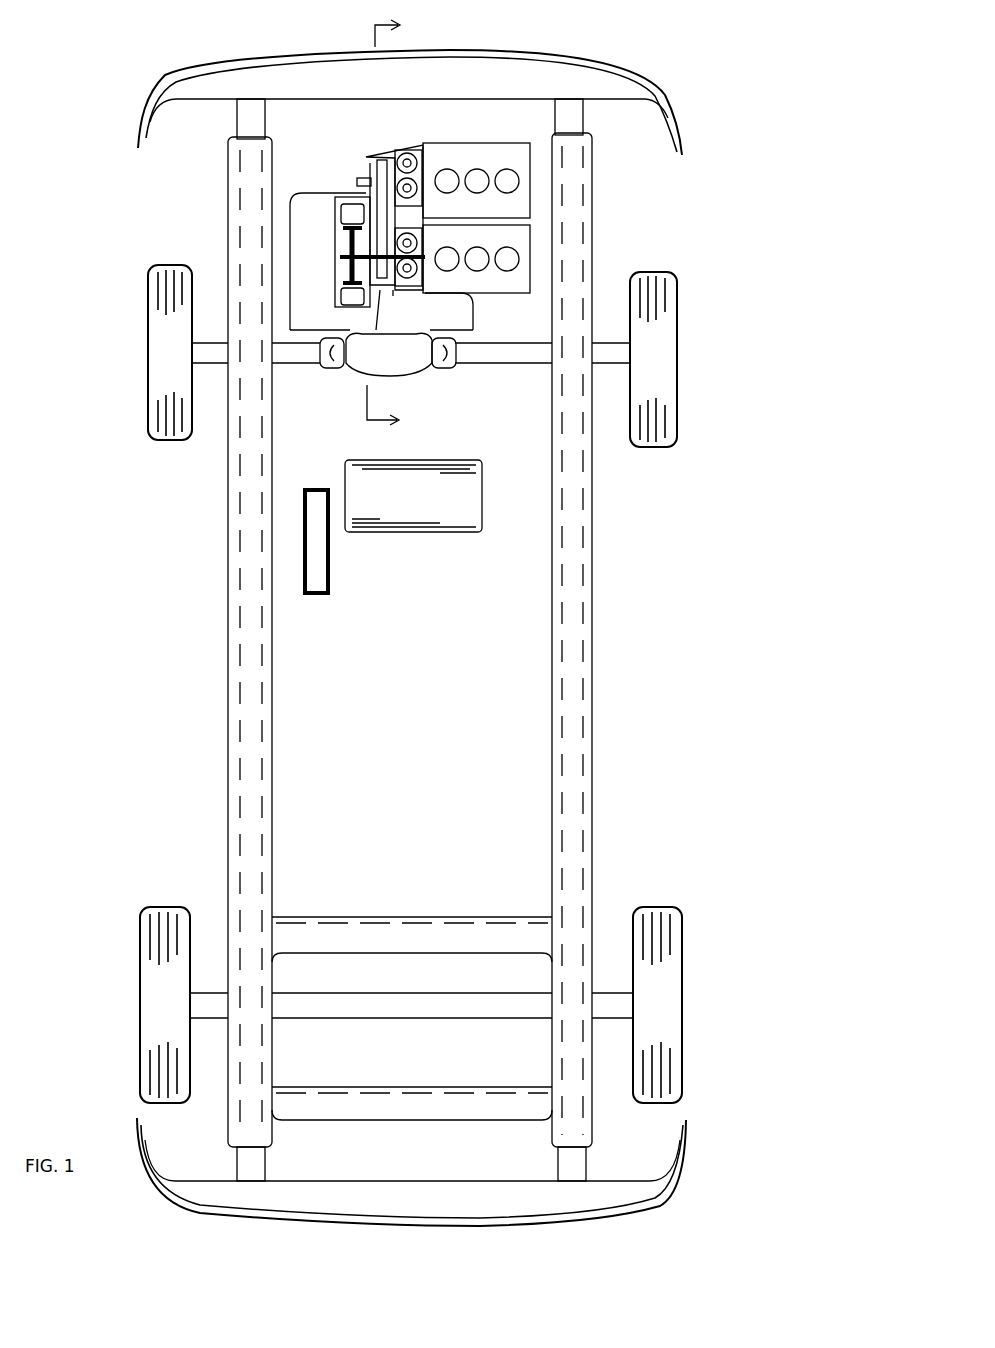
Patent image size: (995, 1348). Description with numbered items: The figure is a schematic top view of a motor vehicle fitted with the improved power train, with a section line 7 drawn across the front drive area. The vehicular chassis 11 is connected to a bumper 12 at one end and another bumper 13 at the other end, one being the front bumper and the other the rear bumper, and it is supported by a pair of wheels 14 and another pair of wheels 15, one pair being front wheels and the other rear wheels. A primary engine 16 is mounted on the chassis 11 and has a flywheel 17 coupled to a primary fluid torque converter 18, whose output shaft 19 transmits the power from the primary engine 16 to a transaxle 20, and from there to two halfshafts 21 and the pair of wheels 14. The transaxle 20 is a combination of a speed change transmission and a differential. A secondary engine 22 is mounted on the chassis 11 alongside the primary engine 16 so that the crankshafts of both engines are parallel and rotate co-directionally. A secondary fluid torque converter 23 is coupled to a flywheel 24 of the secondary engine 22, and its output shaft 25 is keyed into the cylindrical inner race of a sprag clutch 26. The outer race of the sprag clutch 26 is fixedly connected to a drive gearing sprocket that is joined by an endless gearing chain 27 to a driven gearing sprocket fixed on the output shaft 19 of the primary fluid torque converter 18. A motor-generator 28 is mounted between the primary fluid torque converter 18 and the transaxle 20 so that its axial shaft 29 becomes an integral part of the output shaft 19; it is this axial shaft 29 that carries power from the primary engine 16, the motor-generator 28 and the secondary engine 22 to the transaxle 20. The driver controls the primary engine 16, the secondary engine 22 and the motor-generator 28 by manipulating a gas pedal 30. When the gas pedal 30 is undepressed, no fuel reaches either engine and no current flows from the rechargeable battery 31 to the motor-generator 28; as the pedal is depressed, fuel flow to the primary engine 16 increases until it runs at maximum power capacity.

The section line 7 is at (378, 225).
The vehicular chassis 11 is at (594, 622).
The bumper 12 is at (458, 52).
The another bumper 13 is at (495, 1225).
The pair of wheels 14 is at (150, 330).
The another pair of wheels 15 is at (140, 1003).
The primary engine 16 is at (530, 246).
The flywheel 17 is at (426, 287).
The primary fluid torque converter 18 is at (392, 288).
The output shaft 19 is at (374, 314).
The transaxle 20 is at (397, 362).
The halfshafts 21 is at (292, 368).
The secondary engine 22 is at (530, 192).
The secondary fluid torque converter 23 is at (404, 150).
The flywheel 24 is at (421, 148).
The output shaft 25 is at (360, 178).
The sprag clutch 26 is at (377, 161).
The endless gearing chain 27 is at (384, 212).
The motor-generator 28 is at (337, 205).
The axial shaft 29 is at (350, 257).
The gas pedal 30 is at (305, 545).
The rechargeable battery 31 is at (398, 507).